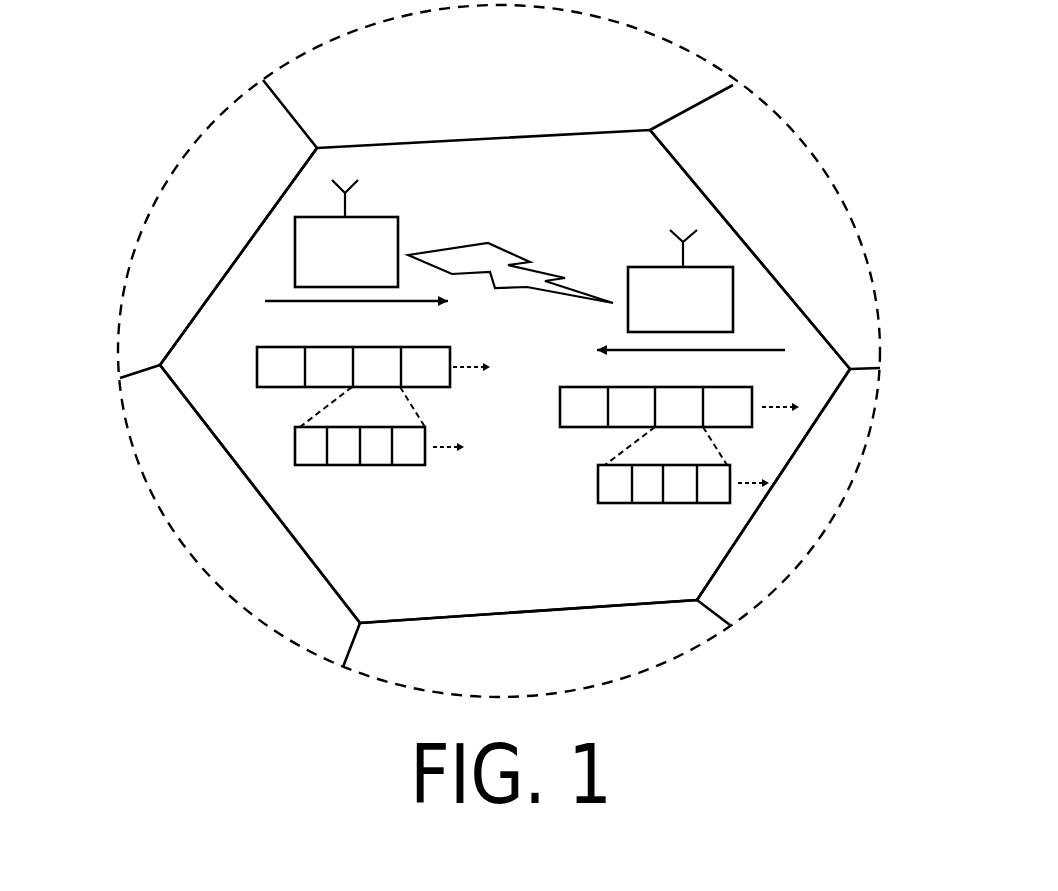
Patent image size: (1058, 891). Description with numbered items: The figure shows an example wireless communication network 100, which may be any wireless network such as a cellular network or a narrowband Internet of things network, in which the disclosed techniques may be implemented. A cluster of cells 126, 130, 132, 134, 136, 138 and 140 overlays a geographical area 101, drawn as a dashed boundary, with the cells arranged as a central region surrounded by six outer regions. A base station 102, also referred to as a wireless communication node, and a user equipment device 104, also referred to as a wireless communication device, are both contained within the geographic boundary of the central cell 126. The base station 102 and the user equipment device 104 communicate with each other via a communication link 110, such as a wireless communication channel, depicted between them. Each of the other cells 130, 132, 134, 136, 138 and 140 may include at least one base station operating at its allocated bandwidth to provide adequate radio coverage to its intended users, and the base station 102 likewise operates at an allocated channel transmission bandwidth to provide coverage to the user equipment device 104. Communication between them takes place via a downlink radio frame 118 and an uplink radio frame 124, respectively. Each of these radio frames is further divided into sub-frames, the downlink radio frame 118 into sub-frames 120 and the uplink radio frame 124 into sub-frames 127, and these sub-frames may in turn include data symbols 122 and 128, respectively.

The wireless communication network 100 is at (898, 118).
The geographical area 101 is at (135, 235).
The base station 102 is at (346, 233).
The user equipment device 104 is at (680, 281).
The communication link 110 is at (500, 250).
The downlink radio frame 118 is at (263, 370).
The sub-frame 120 is at (293, 457).
The data symbol 122 is at (378, 463).
The uplink radio frame 124 is at (568, 408).
The cell 126 is at (525, 441).
The sub-frame 127 is at (600, 495).
The data symbol 128 is at (682, 500).
The cell 130 is at (218, 263).
The cell 132 is at (498, 109).
The cell 134 is at (765, 249).
The cell 136 is at (773, 497).
The cell 138 is at (520, 633).
The cell 140 is at (260, 494).